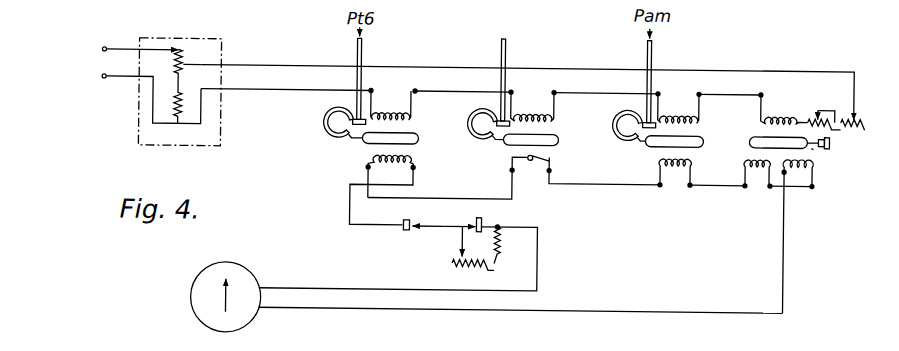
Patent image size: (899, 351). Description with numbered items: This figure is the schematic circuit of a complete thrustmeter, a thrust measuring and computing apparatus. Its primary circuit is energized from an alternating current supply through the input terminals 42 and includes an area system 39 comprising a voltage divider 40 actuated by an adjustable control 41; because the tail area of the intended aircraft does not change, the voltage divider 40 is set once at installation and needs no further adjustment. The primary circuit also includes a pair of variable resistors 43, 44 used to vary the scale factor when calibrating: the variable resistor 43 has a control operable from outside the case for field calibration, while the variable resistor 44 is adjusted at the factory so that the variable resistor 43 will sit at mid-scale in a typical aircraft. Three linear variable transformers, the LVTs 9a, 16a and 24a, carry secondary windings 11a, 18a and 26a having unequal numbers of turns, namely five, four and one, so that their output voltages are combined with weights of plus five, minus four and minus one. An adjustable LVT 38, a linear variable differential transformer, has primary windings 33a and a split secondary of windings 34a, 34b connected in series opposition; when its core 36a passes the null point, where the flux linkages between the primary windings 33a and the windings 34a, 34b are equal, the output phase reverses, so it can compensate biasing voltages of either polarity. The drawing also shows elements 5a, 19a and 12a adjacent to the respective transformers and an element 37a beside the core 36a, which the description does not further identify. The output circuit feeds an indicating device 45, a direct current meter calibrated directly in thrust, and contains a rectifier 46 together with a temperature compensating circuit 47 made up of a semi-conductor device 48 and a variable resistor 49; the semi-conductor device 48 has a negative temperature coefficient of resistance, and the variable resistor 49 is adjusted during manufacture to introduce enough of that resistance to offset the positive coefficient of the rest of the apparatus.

The area system 39 is at (224, 141).
The voltage divider 40 is at (178, 50).
The adjustable control 41 is at (182, 67).
The input terminals 42 is at (101, 53).
The tube clamp 5a is at (328, 139).
The LVT 9a is at (413, 125).
The tube clamp 19a is at (471, 137).
The LVT 24a is at (556, 127).
The tube clamp 12a is at (616, 137).
The LVT 16a is at (701, 126).
The primary windings 33a is at (780, 116).
The variable resistor 43 is at (825, 107).
The variable resistor 44 is at (853, 123).
The core 36a is at (751, 147).
The contact 37a is at (829, 146).
The adjustable LVT 38 is at (813, 148).
The secondary winding 11a is at (390, 159).
The secondary winding 26a is at (552, 162).
The secondary winding 18a is at (678, 167).
The secondary winding 34a is at (760, 167).
The secondary winding 34b is at (794, 166).
The rectifier 46 is at (414, 237).
The temperature compensating circuit 47 is at (455, 245).
The semi-conductor device 48 is at (484, 220).
The variable resistor 49 is at (466, 266).
The indicating device 45 is at (259, 281).